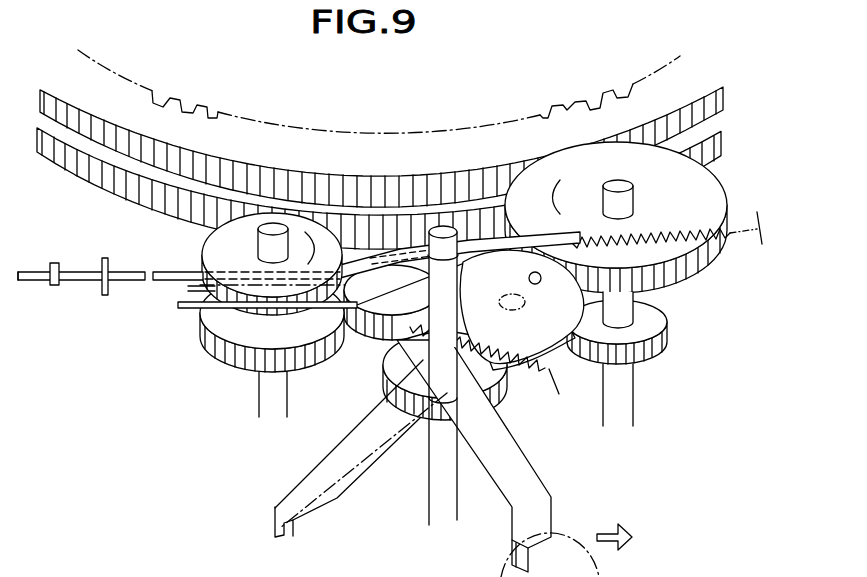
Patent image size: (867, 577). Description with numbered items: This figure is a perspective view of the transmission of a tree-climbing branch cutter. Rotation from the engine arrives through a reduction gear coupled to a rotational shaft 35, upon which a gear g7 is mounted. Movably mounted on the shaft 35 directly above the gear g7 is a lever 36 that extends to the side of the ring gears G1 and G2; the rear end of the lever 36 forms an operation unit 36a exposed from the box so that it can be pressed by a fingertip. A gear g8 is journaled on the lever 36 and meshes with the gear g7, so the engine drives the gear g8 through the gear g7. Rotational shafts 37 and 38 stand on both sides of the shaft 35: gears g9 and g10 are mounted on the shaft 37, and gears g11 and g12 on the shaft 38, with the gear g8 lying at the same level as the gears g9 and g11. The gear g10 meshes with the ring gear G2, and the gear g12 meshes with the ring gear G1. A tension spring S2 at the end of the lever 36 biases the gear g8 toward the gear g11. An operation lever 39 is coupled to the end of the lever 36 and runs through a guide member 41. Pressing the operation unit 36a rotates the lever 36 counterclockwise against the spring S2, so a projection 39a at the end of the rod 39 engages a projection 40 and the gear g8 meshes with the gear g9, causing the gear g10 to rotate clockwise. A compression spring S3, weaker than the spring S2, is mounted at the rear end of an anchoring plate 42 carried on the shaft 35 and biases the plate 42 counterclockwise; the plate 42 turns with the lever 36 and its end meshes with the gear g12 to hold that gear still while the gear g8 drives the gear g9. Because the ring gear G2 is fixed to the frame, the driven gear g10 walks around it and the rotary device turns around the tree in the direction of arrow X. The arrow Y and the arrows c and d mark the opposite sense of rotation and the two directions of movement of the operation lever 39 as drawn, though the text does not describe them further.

The ring gear G1 is at (200, 112).
The ring gear G2 is at (103, 157).
The gear g10 is at (297, 222).
The gear g8 is at (480, 240).
The gear g12 is at (557, 163).
The anchoring plate 42 is at (503, 250).
The tension spring S2 is at (693, 237).
The gear g11 is at (665, 315).
The rotational shaft 38 is at (633, 385).
The gear g9 is at (248, 333).
The rotational shaft 37 is at (258, 413).
The gear g7 is at (392, 372).
The compression spring S3 is at (540, 372).
The lever 36 is at (527, 465).
The rotational shaft 35 is at (433, 480).
The operation unit 36a is at (508, 520).
The operation lever 39 is at (168, 282).
The projection 39a is at (38, 280).
The projection 40 is at (55, 287).
The guide member 41 is at (105, 297).
The direction of rotation X is at (220, 90).
The rotation direction Y is at (608, 65).
The movement direction c is at (97, 250).
The movement direction d is at (143, 251).